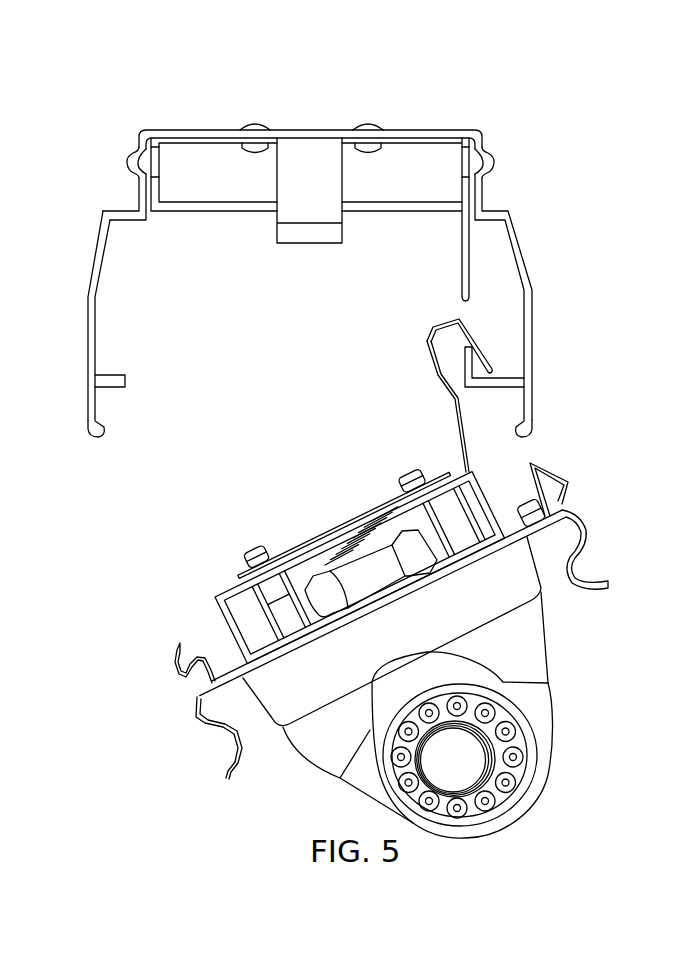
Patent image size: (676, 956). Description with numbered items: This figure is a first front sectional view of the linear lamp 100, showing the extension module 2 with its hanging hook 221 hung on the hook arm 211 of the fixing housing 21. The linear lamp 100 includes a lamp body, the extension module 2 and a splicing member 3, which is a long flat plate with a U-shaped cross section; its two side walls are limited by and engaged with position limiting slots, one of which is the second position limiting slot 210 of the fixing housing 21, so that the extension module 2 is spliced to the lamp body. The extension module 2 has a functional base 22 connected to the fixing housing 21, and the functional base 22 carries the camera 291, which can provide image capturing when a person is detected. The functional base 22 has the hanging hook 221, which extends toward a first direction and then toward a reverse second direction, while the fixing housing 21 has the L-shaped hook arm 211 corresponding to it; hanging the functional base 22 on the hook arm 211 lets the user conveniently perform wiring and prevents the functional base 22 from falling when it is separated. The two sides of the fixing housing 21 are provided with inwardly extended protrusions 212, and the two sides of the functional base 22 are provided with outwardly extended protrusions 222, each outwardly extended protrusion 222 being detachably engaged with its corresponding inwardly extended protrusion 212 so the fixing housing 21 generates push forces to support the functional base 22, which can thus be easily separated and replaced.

The extension module 2 is at (297, 95).
The fixing housing 21 is at (410, 133).
The second position limiting slot 210 is at (140, 160).
The hook arm 211 is at (468, 363).
The inwardly extended protrusion 212 is at (90, 430).
The hanging hook 221 is at (482, 342).
The outwardly extended protrusion 222 is at (182, 667).
The functional base 22 is at (583, 520).
The splicing member 3 is at (241, 214).
The linear lamp 100 is at (334, 643).
The camera 291 is at (467, 750).